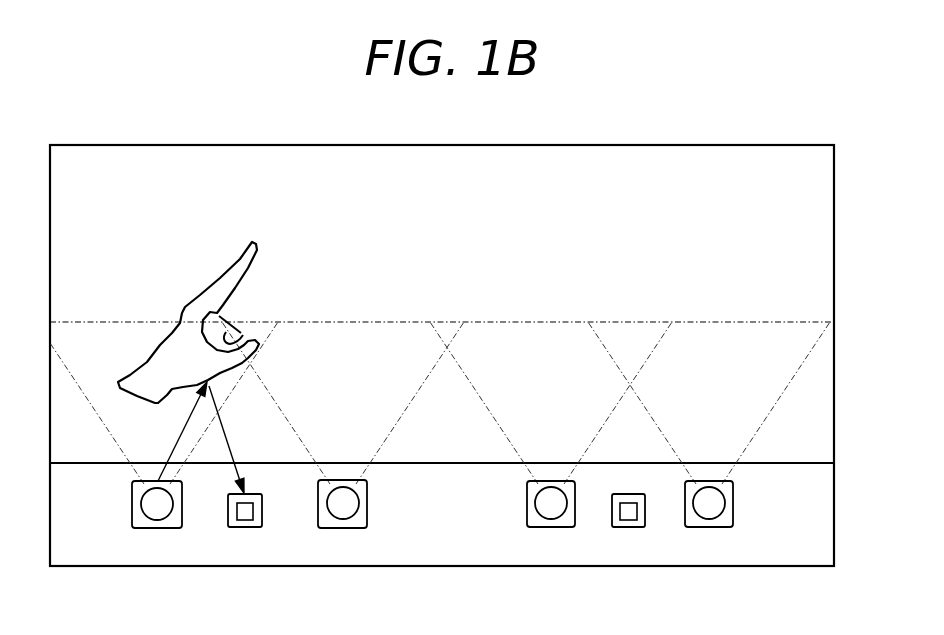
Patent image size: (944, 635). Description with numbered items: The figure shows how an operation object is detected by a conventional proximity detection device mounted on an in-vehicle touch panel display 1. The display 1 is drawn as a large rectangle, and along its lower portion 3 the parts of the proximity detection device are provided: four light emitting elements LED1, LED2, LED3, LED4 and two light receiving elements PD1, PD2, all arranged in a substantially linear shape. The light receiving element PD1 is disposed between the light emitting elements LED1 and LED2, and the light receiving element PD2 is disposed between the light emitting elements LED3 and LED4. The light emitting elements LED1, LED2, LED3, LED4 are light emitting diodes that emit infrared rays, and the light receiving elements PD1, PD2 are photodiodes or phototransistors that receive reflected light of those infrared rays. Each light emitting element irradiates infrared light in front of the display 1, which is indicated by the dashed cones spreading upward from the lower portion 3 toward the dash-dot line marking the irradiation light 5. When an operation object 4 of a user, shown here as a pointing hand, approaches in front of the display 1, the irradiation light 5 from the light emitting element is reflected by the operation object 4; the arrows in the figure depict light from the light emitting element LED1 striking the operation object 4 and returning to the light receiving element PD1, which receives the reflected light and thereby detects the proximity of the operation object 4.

The touch panel display 1 is at (451, 145).
The lower portion 3 is at (461, 440).
The operation object 4 is at (220, 272).
The irradiation light 5 is at (738, 321).
The light emitting element LED1 is at (154, 520).
The light emitting element LED2 is at (345, 519).
The light emitting element LED3 is at (550, 520).
The light emitting element LED4 is at (710, 520).
The light receiving element PD1 is at (245, 526).
The light receiving element PD2 is at (627, 526).